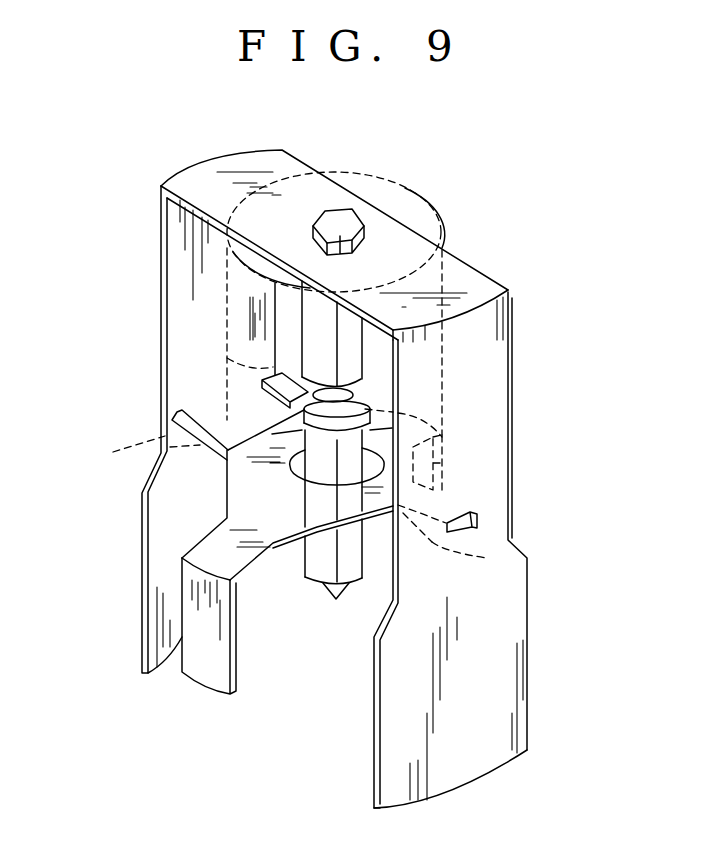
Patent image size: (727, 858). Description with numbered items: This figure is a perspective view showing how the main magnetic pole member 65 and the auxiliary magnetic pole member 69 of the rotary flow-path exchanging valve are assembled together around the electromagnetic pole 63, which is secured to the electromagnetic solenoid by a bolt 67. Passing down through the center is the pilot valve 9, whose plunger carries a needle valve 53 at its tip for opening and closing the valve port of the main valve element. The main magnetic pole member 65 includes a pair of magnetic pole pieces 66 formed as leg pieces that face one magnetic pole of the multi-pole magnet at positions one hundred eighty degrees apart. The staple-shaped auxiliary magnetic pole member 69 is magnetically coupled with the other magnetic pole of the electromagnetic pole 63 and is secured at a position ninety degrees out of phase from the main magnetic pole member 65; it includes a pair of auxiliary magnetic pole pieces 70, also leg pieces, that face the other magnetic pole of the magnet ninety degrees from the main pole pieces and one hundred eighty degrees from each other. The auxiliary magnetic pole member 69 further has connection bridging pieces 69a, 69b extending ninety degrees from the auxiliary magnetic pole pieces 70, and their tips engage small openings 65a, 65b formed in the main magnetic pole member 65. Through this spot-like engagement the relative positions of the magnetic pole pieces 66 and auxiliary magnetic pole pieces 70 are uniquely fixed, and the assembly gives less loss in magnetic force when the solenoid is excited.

The pilot valve 9 is at (313, 558).
The needle valve 53 is at (335, 600).
The electromagnetic pole 63 is at (388, 172).
The main magnetic pole member 65 is at (462, 272).
The small opening 65a is at (125, 452).
The small opening 65b is at (477, 532).
The magnetic pole pieces 66 is at (163, 597).
The bolt 67 is at (340, 209).
The auxiliary magnetic pole member 69 is at (248, 497).
The connection bridging piece 69a is at (203, 412).
The connection bridging piece 69b is at (487, 558).
The auxiliary magnetic pole pieces 70 is at (205, 683).